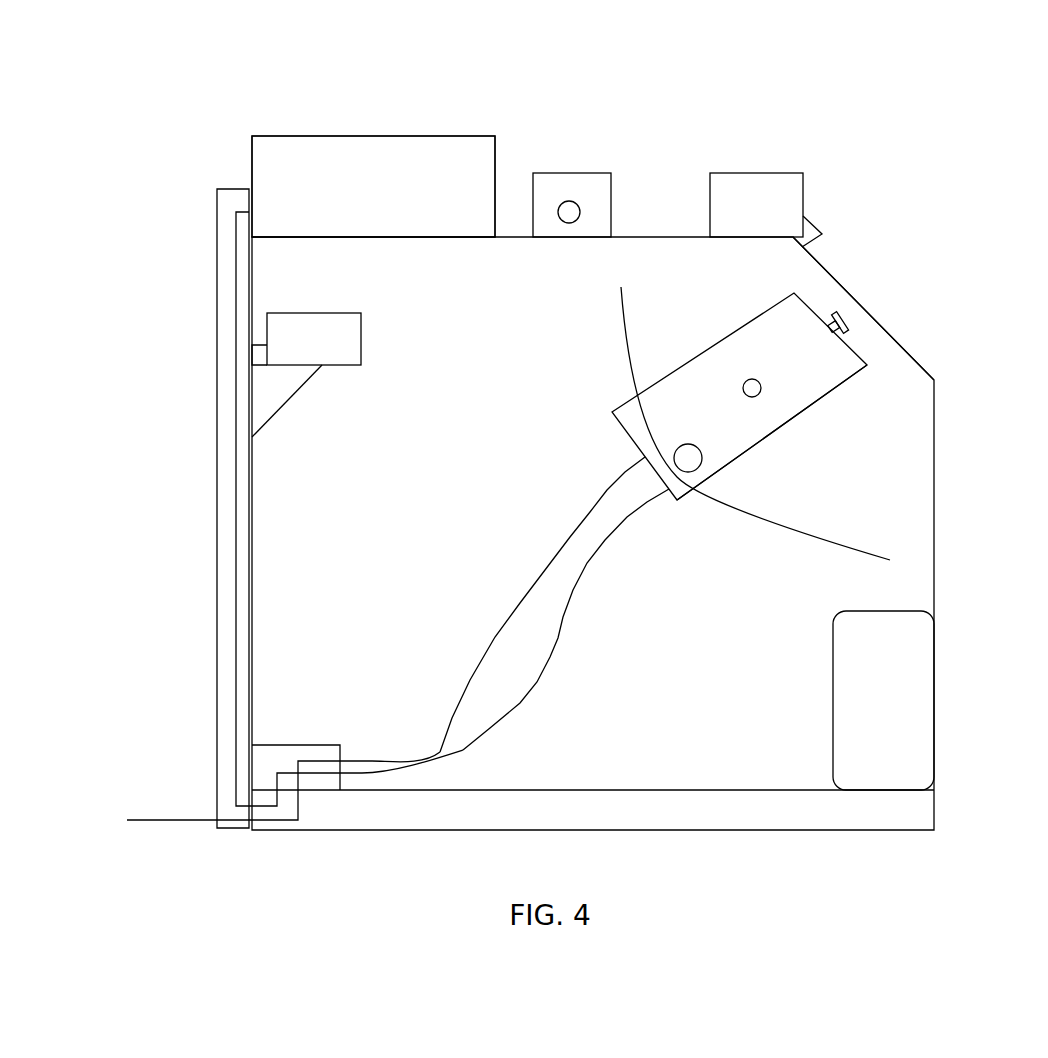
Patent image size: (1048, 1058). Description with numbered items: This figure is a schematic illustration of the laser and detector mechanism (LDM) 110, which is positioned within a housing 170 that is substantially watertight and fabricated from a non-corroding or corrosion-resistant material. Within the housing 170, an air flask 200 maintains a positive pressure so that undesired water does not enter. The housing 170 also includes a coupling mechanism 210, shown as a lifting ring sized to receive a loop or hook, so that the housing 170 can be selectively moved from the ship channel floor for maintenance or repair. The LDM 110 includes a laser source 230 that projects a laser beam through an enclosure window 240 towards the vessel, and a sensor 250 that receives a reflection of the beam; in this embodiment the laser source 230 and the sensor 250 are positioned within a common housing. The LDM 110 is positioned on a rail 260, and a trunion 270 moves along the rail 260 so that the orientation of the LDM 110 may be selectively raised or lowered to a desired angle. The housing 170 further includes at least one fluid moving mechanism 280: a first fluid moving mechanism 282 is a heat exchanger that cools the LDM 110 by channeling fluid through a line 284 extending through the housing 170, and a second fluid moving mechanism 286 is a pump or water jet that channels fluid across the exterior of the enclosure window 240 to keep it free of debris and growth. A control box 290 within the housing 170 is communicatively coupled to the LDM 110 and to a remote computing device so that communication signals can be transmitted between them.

The laser and detector mechanism (LDM) 110 is at (172, 774).
The housing 170 is at (938, 527).
The air flask 200 is at (921, 735).
The coupling mechanism 210 is at (589, 161).
The laser source 230 is at (693, 347).
The enclosure window 240 is at (835, 271).
The sensor 250 is at (804, 429).
The rail 260 is at (787, 528).
The trunion 270 is at (684, 446).
The fluid moving mechanism 280 is at (391, 122).
The first fluid moving mechanism 282 is at (309, 124).
The line 284 is at (223, 292).
The second fluid moving mechanism 286 is at (808, 162).
The control box 290 is at (374, 309).